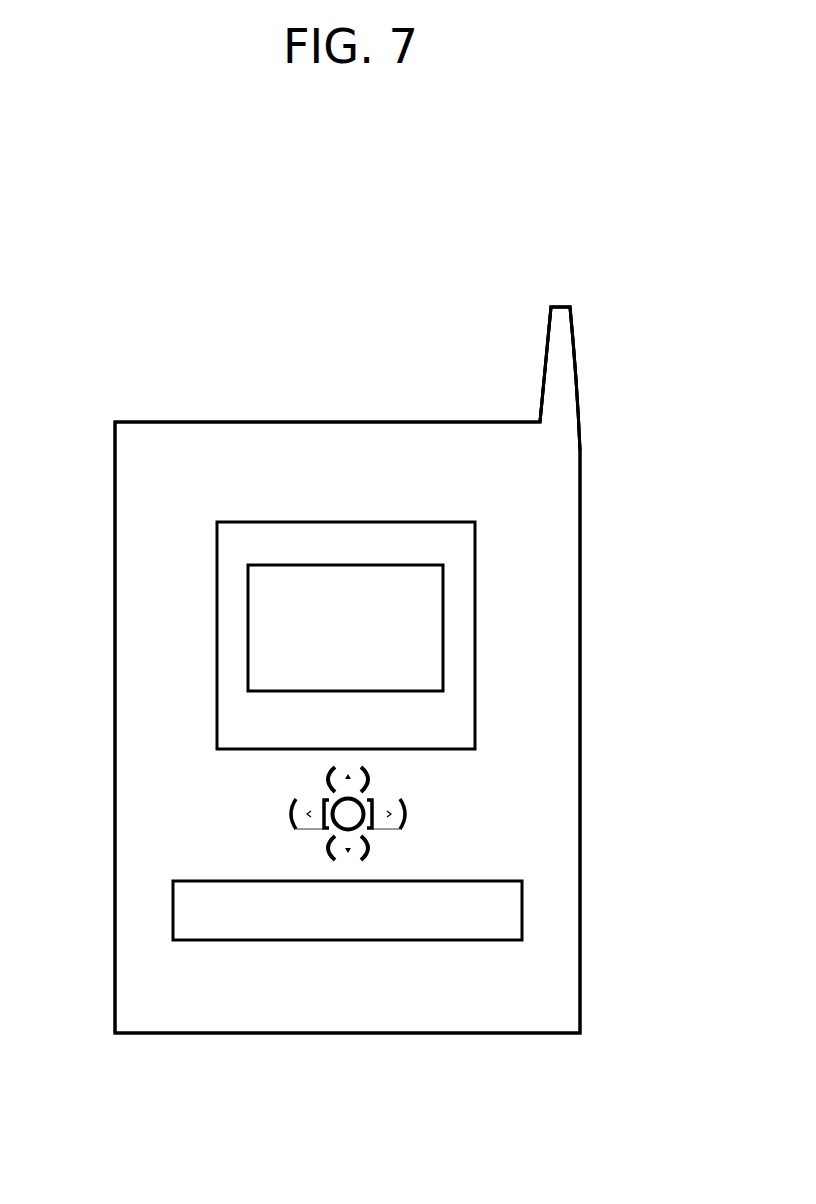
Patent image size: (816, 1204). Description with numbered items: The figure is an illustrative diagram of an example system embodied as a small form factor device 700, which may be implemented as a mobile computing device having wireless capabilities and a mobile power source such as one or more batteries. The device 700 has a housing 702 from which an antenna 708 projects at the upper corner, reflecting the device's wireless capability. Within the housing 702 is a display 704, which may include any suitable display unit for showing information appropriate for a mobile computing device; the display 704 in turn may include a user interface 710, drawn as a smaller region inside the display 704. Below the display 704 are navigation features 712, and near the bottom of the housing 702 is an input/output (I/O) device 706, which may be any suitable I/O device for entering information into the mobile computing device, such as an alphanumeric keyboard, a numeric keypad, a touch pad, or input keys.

The small form factor device 700 is at (124, 313).
The housing 702 is at (580, 727).
The display 704 is at (475, 546).
The input/output (I/O) device 706 is at (522, 919).
The antenna 708 is at (545, 355).
The user interface 710 is at (443, 632).
The navigation features 712 is at (446, 803).